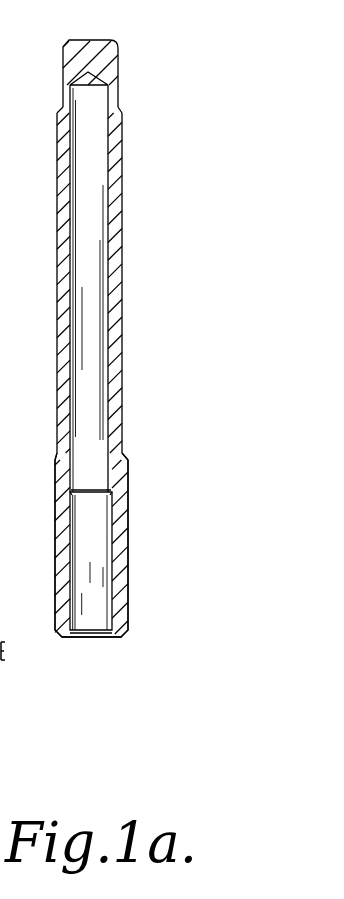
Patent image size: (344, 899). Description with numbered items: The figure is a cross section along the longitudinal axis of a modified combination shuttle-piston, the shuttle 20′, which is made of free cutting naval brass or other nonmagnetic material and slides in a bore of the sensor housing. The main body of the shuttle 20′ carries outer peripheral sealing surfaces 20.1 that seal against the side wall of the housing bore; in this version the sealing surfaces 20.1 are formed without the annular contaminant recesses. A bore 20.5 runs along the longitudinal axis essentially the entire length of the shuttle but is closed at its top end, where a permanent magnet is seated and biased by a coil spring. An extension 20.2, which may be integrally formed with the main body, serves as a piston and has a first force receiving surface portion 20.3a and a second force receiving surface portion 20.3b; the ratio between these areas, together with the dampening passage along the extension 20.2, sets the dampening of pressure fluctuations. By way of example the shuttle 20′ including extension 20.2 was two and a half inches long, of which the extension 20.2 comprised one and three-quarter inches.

The second force receiving surface portion 20.3b is at (118, 23).
The bore 20.5 is at (138, 262).
The extension 20.2 is at (118, 331).
The first force receiving surface portion 20.3a is at (120, 458).
The shuttle 20′ is at (127, 544).
The sealing surfaces 20.1 is at (130, 588).